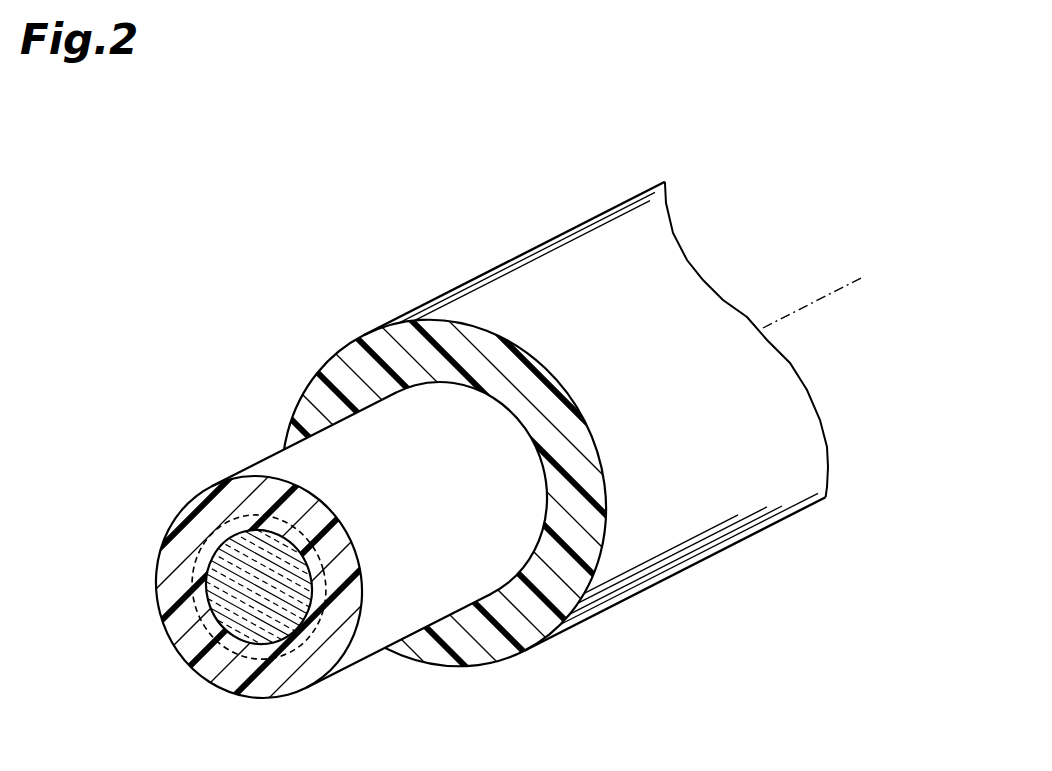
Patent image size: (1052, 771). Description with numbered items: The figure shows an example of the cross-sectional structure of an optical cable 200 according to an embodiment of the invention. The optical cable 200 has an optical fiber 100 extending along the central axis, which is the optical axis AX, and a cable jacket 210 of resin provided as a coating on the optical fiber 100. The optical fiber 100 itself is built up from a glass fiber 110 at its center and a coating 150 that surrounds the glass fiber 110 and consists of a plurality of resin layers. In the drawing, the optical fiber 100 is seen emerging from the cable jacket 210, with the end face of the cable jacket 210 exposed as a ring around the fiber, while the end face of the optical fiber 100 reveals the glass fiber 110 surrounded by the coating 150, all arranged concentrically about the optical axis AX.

The optical fiber 100 is at (260, 447).
The glass fiber 110 is at (214, 576).
The coating 150 is at (205, 520).
The optical cable 200 is at (558, 196).
The cable jacket 210 is at (345, 354).
The optical axis AX is at (259, 587).